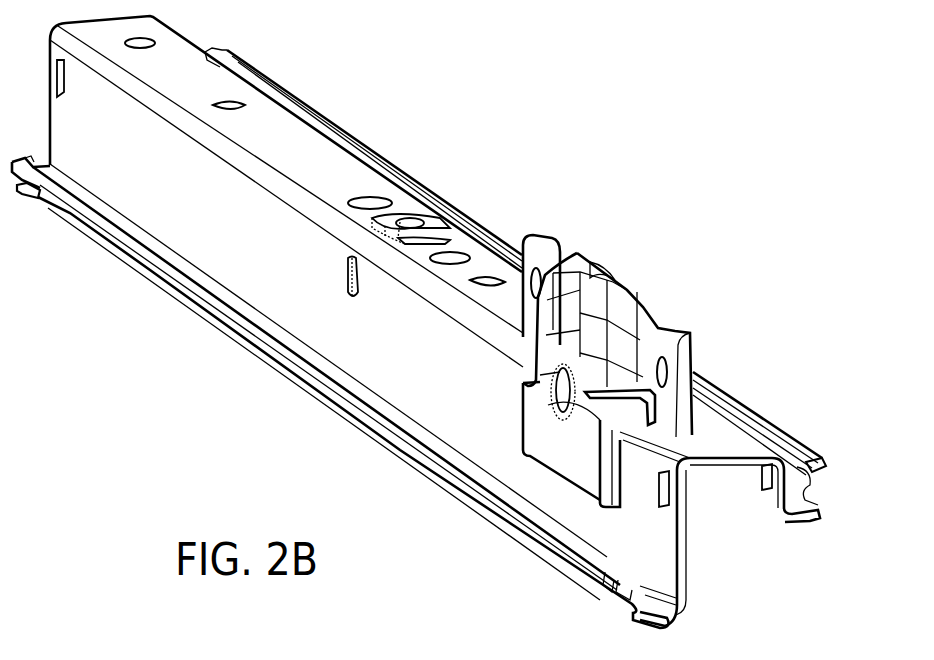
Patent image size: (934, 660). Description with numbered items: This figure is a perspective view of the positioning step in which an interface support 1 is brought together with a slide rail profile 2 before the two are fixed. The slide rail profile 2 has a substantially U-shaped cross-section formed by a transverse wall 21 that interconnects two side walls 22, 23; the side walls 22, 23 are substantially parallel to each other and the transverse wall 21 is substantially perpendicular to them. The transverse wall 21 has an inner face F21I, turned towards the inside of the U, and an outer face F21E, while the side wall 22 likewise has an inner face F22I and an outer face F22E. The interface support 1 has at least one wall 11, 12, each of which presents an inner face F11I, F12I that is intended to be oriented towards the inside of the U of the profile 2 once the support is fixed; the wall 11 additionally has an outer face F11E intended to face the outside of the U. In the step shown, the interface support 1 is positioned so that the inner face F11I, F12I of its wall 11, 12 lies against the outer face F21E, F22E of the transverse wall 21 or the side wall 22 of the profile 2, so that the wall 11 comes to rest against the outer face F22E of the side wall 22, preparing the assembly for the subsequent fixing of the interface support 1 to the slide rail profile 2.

The interface support 1 is at (412, 322).
The slide rail profile 2 is at (692, 457).
The wall 11 is at (557, 457).
The wall 12 is at (688, 338).
The transverse wall 21 is at (778, 470).
The side wall 22 is at (688, 570).
The side wall 23 is at (792, 475).
The outer face F11E is at (543, 433).
The inner face F11I is at (633, 477).
The inner face F12I is at (750, 437).
The outer face F21E is at (712, 410).
The inner face F21I is at (733, 463).
The outer face F22E is at (647, 527).
The inner face F22I is at (700, 560).